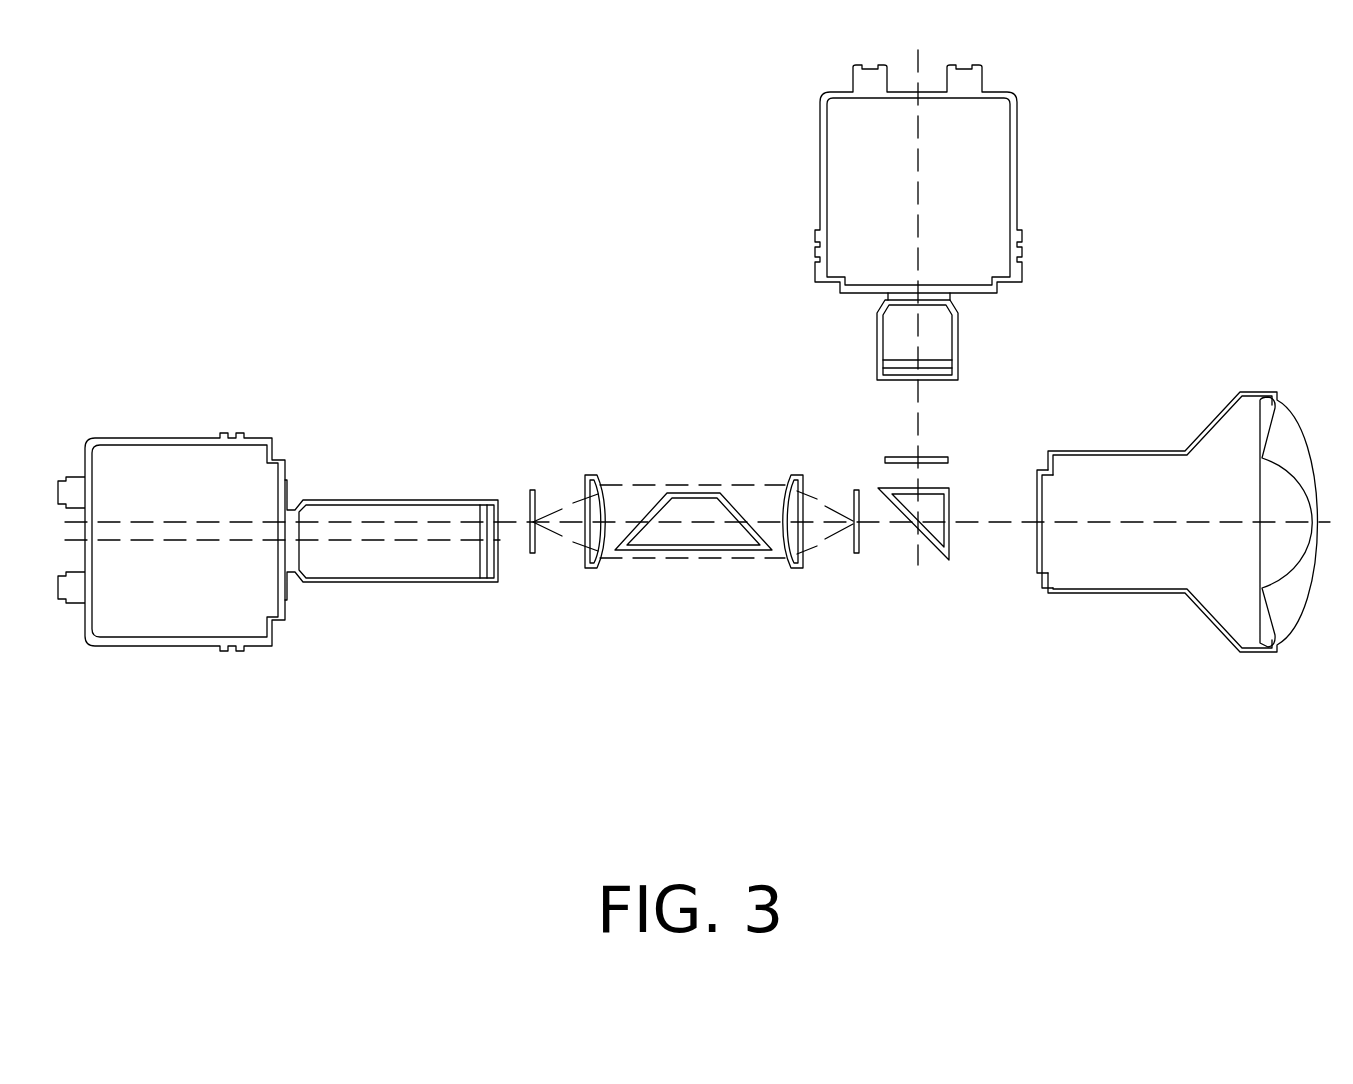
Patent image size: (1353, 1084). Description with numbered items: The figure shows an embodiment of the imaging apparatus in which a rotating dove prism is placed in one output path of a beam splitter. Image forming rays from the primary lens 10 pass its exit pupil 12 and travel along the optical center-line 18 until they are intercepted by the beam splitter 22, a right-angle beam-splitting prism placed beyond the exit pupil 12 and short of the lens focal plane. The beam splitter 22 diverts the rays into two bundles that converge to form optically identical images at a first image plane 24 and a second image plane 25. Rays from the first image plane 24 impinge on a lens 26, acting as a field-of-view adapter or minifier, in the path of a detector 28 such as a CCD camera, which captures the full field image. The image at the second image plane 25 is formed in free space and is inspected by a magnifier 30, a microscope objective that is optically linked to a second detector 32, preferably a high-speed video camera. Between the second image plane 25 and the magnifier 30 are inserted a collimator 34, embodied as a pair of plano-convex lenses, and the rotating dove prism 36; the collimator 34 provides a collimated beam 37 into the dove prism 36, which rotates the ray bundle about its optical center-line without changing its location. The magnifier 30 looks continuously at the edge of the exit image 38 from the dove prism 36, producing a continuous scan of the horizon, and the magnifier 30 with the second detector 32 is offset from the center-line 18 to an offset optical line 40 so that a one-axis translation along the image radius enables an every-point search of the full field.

The primary lens 10 is at (1220, 410).
The exit pupil 12 is at (1037, 562).
The optical center-line 18 is at (520, 512).
The beam splitter 22 is at (945, 560).
The first image plane 24 is at (940, 457).
The second image plane 25 is at (860, 543).
The lens 26 is at (958, 342).
The detector 28 is at (1017, 155).
The magnifier 30 is at (378, 500).
The second detector 32 is at (155, 437).
The collimator 34 is at (598, 485).
The dove prism 36 is at (688, 493).
The collimated beam 37 is at (760, 485).
The exit image 38 is at (545, 546).
The offset optical line 40 is at (515, 545).